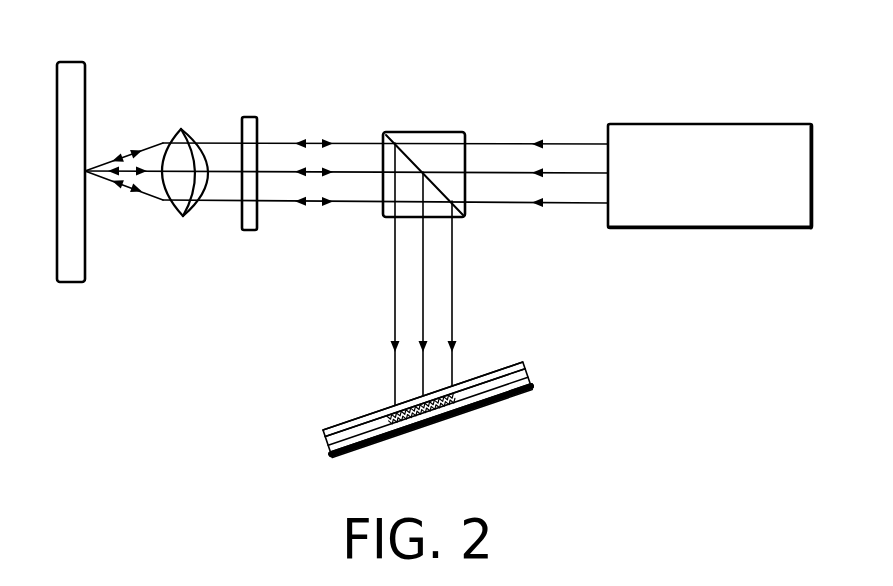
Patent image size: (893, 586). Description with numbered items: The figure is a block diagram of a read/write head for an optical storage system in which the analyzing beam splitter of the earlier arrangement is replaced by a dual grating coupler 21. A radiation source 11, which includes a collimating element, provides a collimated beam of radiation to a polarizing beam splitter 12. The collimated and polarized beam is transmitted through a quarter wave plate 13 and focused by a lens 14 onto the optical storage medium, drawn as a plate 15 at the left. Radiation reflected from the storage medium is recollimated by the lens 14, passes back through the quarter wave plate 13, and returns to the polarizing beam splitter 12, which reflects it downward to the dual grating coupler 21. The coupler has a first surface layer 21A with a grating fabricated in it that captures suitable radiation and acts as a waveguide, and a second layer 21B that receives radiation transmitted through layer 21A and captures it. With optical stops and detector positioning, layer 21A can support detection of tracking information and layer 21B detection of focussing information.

The radiation source 11 is at (709, 124).
The polarizing beam splitter 12 is at (408, 132).
The quarter wave plate 13 is at (249, 117).
The lens 14 is at (182, 129).
The recording medium plate 15 is at (72, 62).
The dual grating coupler 21 is at (473, 412).
The first surface layer 21A is at (527, 368).
The second layer 21B is at (537, 381).